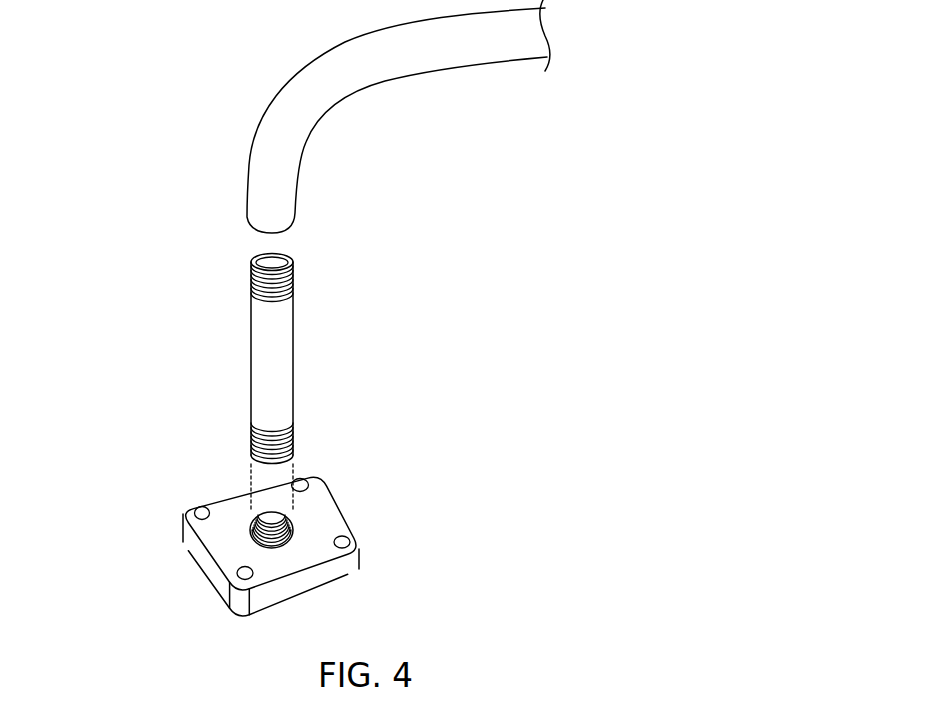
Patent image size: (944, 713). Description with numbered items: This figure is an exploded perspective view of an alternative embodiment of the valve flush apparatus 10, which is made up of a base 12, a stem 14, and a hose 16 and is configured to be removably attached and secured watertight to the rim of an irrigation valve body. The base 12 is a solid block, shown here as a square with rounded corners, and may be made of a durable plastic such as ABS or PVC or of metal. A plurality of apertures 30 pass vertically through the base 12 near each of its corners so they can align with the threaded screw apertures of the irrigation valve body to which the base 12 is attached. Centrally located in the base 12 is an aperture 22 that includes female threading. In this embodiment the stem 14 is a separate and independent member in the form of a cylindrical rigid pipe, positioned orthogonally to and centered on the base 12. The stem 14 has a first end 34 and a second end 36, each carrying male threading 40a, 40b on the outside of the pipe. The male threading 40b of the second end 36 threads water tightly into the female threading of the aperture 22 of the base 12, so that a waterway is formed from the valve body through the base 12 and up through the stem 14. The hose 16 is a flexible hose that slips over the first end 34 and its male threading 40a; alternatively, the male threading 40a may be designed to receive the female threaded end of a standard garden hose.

The valve flush apparatus 10 is at (154, 29).
The base 12 is at (271, 538).
The stem 14 is at (275, 354).
The hose 16 is at (375, 67).
The aperture 22 is at (250, 531).
The plurality of apertures 30 is at (343, 541).
The first end 34 is at (273, 257).
The second end 36 is at (266, 464).
The male threading 40a is at (258, 285).
The male threading 40b is at (258, 447).